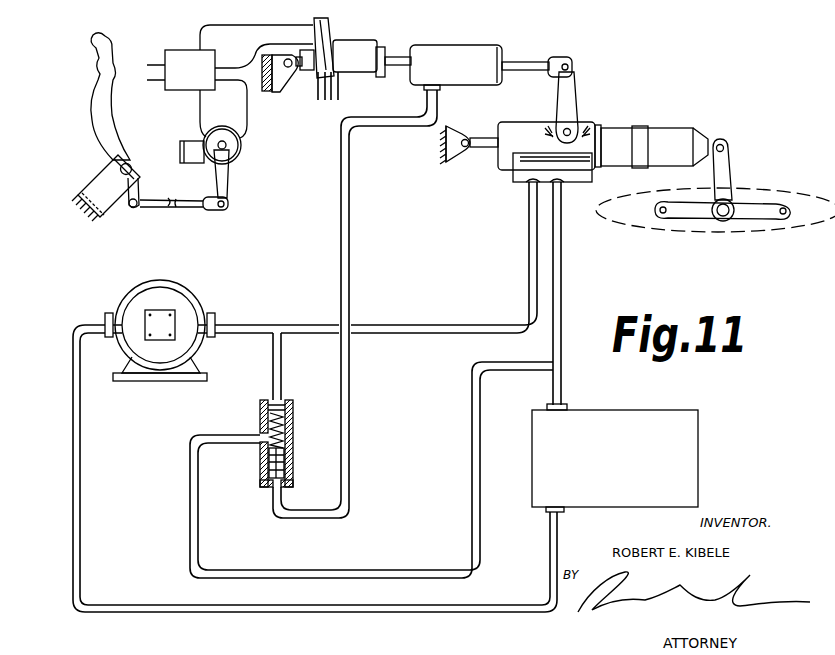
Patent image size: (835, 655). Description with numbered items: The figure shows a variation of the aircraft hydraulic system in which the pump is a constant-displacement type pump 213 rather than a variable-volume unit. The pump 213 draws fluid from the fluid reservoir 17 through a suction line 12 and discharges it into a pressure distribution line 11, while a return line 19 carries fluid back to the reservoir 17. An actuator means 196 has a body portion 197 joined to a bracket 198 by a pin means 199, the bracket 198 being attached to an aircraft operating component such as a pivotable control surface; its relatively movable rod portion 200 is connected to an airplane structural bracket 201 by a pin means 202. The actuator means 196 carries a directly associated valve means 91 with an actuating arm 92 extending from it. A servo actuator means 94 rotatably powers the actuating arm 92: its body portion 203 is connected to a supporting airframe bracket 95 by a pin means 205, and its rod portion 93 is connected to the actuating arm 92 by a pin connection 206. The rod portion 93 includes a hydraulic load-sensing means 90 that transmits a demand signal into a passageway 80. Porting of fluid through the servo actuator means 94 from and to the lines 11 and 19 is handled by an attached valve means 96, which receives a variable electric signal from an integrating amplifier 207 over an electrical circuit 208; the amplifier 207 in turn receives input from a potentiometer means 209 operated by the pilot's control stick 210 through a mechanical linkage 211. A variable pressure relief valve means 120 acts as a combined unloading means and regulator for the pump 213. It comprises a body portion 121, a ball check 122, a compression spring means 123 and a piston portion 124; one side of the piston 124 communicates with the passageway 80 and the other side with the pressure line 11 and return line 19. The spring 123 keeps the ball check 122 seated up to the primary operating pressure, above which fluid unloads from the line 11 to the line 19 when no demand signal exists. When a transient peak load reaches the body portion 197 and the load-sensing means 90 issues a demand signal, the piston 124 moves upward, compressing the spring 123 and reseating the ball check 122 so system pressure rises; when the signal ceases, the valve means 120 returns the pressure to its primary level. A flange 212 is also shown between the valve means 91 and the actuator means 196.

The pressure distribution line 11 is at (412, 324).
The suction line 12 is at (145, 606).
The fluid reservoir 17 is at (648, 466).
The return line 19 is at (562, 304).
The passageway 80 is at (352, 125).
The hydraulic load-sensing means 90 is at (460, 42).
The valve means 91 is at (530, 126).
The actuating arm 92 is at (578, 90).
The rod portion 93 is at (398, 68).
The servo actuator means 94 is at (351, 41).
The supporting airframe bracket 95 is at (266, 91).
The valve means 96 is at (324, 28).
The variable pressure relief valve means 120 is at (273, 425).
The body portion 121 is at (290, 400).
The ball check 122 is at (262, 404).
The compression spring means 123 is at (284, 430).
The piston portion 124 is at (290, 470).
The actuator means 196 is at (678, 121).
The body portion 197 is at (708, 140).
The bracket 198 is at (734, 176).
The pin means 199 is at (724, 145).
The rod portion 200 is at (484, 138).
The airplane structural bracket 201 is at (448, 165).
The pin means 202 is at (470, 153).
The body portion 203 is at (372, 48).
The pin means 205 is at (291, 70).
The pin connection 206 is at (576, 60).
The integrating amplifier 207 is at (206, 79).
The electrical circuit 208 is at (210, 26).
The potentiometer means 209 is at (242, 146).
The pilot's control stick 210 is at (112, 125).
The mechanical linkage 211 is at (178, 214).
The flange 212 is at (598, 122).
The constant-displacement type pump 213 is at (185, 308).